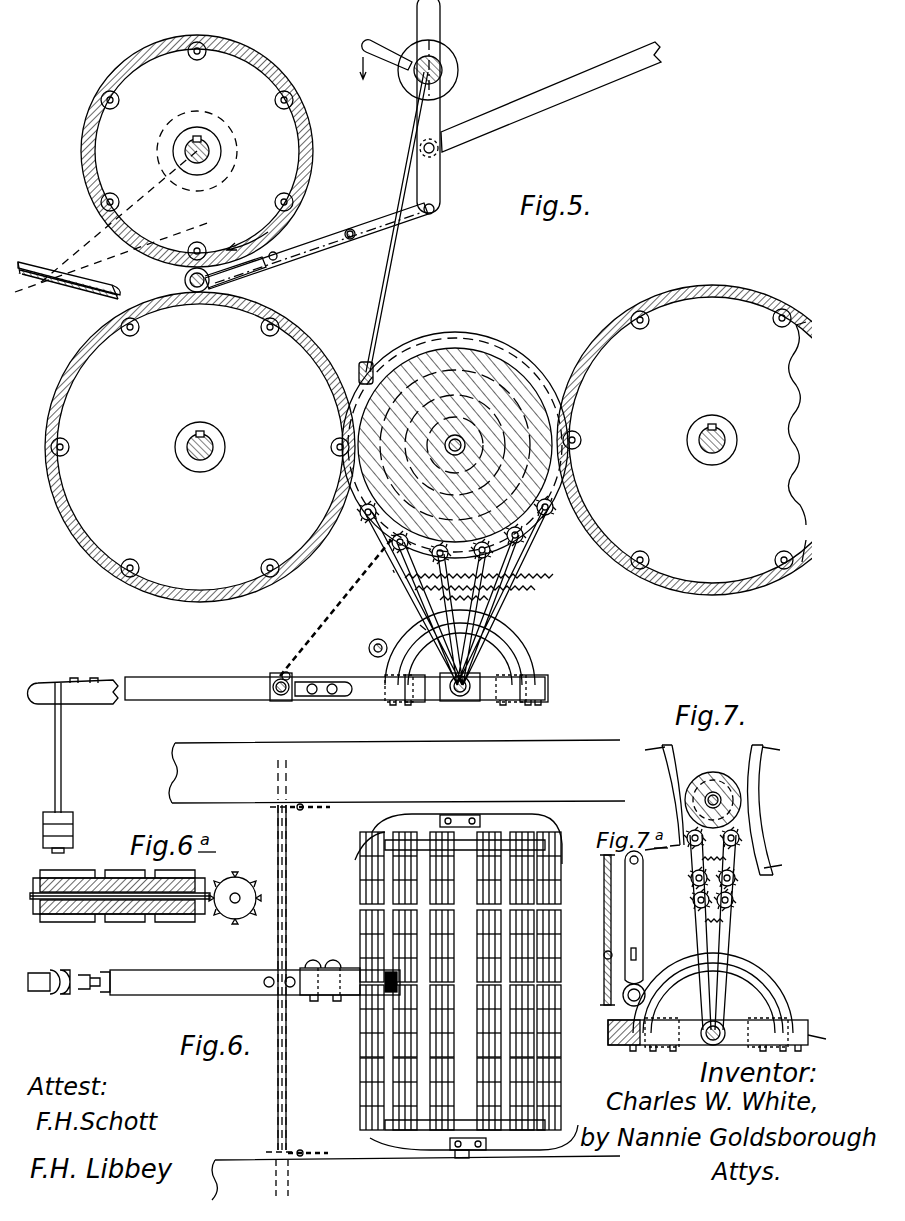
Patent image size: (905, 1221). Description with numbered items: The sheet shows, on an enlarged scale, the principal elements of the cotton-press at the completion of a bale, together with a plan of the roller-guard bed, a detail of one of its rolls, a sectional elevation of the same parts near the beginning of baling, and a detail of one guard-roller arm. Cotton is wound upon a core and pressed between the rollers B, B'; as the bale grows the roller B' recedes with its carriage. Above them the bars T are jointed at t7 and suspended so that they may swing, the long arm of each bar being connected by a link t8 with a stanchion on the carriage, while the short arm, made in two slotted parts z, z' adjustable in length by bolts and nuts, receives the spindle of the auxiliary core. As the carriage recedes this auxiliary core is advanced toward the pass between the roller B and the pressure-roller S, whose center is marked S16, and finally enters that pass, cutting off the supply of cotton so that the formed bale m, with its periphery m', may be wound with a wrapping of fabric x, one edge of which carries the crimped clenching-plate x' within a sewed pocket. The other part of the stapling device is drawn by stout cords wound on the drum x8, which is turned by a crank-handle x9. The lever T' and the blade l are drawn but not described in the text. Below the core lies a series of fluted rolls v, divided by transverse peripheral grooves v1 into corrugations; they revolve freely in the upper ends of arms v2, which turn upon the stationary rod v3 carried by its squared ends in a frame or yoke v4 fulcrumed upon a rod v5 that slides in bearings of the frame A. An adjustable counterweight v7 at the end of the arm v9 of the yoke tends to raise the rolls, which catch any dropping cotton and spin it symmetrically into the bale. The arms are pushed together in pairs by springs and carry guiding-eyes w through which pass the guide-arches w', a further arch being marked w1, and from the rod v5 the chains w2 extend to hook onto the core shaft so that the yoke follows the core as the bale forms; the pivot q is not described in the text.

In FIG. 5, the pressure-roller S is at (86, 135).
In FIG. 5, the shaft of wheel S S16 is at (210, 148).
In FIG. 5, the blade l is at (66, 280).
In FIG. 5, the bars T is at (435, 106).
In FIG. 5, the drum x8 is at (445, 74).
In FIG. 5, the crank-handle x9 is at (372, 44).
In FIG. 5, the link t8 is at (545, 116).
In FIG. 5, the joint t7 is at (436, 208).
In FIG. 5, the short arm part z' is at (316, 238).
In FIG. 5, the lever T' is at (408, 238).
In FIG. 5, the short arm part z is at (231, 277).
In FIG. 5, the fabric x is at (383, 222).
In FIG. 5, the crimped clenching-plate x' is at (378, 348).
In FIG. 5, the roller B is at (200, 447).
In FIG. 7, the roller B is at (660, 797).
In FIG. 5, the roller B' is at (712, 440).
In FIG. 7, the roller B' is at (769, 810).
In FIG. 5, the drum surface m' is at (455, 431).
In FIG. 5, the drum m is at (455, 445).
In FIG. 7, the drum m is at (713, 785).
In FIG. 5, the rolls v is at (366, 523).
In FIG. 6A, the rolls v is at (244, 876).
In FIG. 6, the rolls v is at (360, 850).
In FIG. 7, the rolls v is at (752, 840).
In FIG. 6A, the transverse peripheral grooves v1 is at (74, 872).
In FIG. 6, the transverse peripheral grooves v1 is at (570, 1076).
In FIG. 5, the arms v2 is at (524, 588).
In FIG. 7, the arms v2 is at (746, 912).
In FIG. 7A, the arms v2 is at (606, 935).
In FIG. 5, the stationary rod v3 is at (462, 700).
In FIG. 6, the stationary rod v3 is at (470, 1152).
In FIG. 7, the stationary rod v3 is at (710, 1045).
In FIG. 6, the frame or yoke v4 is at (350, 966).
In FIG. 7, the frame or yoke v4 is at (795, 1018).
In FIG. 5, the rod v5 is at (281, 700).
In FIG. 6, the rod v5 is at (285, 888).
In FIG. 5, the adjustable counterweight v7 is at (74, 826).
In FIG. 6, the adjustable counterweight v7 is at (62, 998).
In FIG. 5, the arm v9 is at (170, 676).
In FIG. 6, the arm v9 is at (183, 970).
In FIG. 5, the guiding-eyes w is at (462, 641).
In FIG. 7, the guiding-eyes w is at (713, 987).
In FIG. 7A, the guiding-eyes w is at (614, 928).
In FIG. 5, the guide-arches w' is at (467, 651).
In FIG. 7, the guide-arches w' is at (713, 985).
In FIG. 5, the quadrant arc w1 is at (510, 655).
In FIG. 7, the quadrant arc w1 is at (755, 1000).
In FIG. 5, the chains w2 is at (345, 600).
In FIG. 6, the chains w2 is at (330, 808).
In FIG. 5, the pivot q is at (368, 647).
In FIG. 6, the pivot q is at (384, 978).
In FIG. 6, the frame A is at (512, 770).